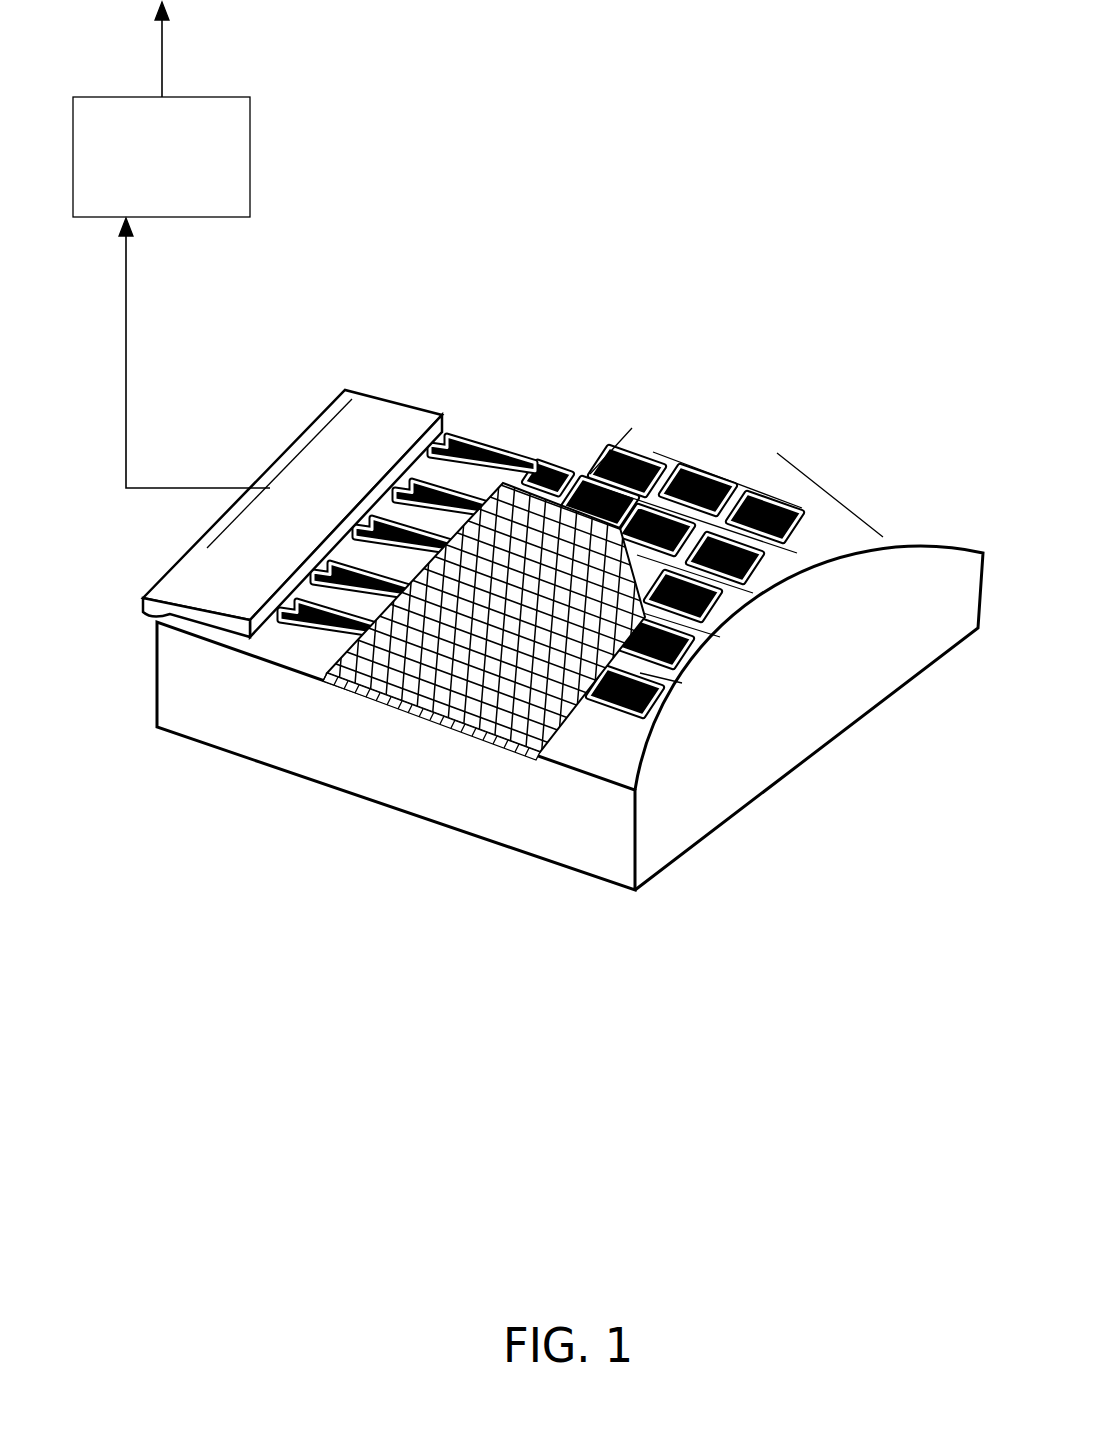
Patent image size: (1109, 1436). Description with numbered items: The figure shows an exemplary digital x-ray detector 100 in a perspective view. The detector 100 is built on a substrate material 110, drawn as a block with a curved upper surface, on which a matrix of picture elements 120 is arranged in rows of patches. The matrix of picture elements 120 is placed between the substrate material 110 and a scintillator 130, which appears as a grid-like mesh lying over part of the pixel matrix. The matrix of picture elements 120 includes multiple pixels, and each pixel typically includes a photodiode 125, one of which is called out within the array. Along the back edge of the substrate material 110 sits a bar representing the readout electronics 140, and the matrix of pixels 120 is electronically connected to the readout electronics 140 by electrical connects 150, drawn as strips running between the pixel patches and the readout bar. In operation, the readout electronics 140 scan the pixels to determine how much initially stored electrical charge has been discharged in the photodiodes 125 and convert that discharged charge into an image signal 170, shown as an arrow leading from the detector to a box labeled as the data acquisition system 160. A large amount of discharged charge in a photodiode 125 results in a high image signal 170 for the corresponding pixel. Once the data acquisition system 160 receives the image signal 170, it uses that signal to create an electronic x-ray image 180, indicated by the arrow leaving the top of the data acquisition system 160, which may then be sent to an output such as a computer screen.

The digital detector 100 is at (528, 565).
The substrate material 110 is at (862, 642).
The matrix of picture elements 120 is at (803, 523).
The photodiode 125 is at (687, 493).
The scintillator 130 is at (434, 662).
The readout electronics 140 is at (333, 478).
The electrical connects 150 is at (498, 457).
The data acquisition system 160 is at (250, 137).
The image signal 170 is at (127, 292).
The electronic x-ray image 180 is at (160, 48).